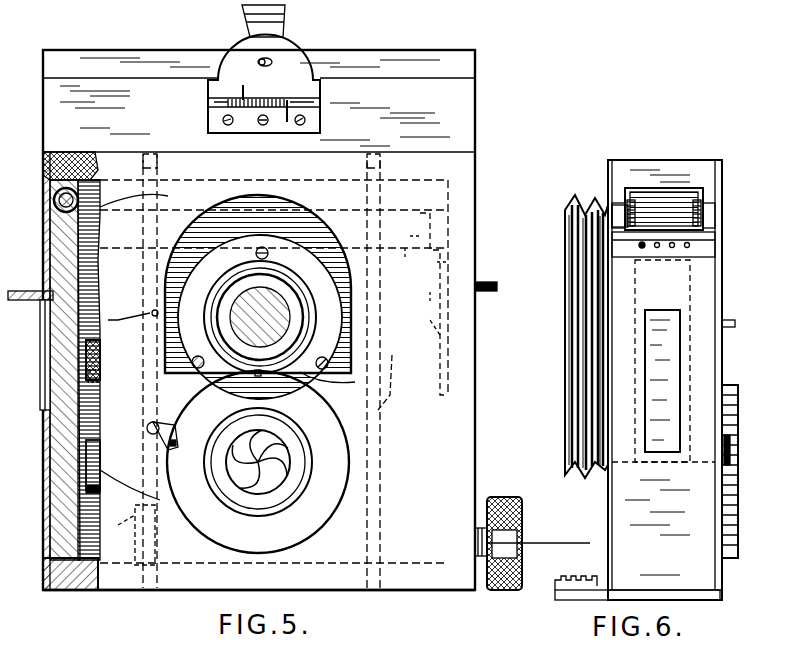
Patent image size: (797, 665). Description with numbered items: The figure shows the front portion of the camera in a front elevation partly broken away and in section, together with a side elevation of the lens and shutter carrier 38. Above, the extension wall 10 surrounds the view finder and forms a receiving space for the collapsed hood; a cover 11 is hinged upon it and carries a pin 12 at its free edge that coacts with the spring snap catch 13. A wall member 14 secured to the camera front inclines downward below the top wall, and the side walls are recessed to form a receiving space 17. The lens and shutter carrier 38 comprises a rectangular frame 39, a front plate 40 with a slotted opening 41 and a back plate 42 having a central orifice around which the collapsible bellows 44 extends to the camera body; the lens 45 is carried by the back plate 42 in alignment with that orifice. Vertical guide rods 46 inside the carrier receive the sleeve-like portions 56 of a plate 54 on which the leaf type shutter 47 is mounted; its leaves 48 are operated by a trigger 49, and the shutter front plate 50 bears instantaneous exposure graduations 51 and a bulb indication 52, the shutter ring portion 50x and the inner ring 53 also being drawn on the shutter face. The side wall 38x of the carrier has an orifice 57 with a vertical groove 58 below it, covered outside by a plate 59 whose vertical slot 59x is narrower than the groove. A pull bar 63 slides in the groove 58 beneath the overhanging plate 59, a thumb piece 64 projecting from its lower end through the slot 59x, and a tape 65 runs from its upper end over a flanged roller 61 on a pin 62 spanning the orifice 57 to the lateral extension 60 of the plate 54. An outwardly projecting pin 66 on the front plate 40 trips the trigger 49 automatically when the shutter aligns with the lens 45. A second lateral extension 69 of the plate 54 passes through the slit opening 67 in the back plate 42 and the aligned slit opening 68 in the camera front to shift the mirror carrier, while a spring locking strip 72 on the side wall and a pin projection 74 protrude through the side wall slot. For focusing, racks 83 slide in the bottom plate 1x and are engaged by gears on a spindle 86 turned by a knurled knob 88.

In FIG. 5, the extension wall 10 is at (468, 133).
In FIG. 5, the cover 11 is at (466, 68).
In FIG. 5, the pin 12 is at (270, 60).
In FIG. 5, the spring snap catch 13 is at (292, 83).
In FIG. 5, the wall member 14 is at (424, 304).
In FIG. 5, the receiving space 17 is at (445, 228).
In FIG. 5, the lens and shutter carrier 38 is at (476, 210).
In FIG. 6, the lens and shutter carrier 38 is at (676, 160).
In FIG. 5, the side wall of the lens and shutter carrier 38x is at (56, 501).
In FIG. 6, the side wall of the lens and shutter carrier 38x is at (690, 178).
In FIG. 5, the rectangular frame 39 is at (458, 472).
In FIG. 6, the rectangular frame 39 is at (624, 162).
In FIG. 5, the front plate 40 is at (393, 580).
In FIG. 6, the front plate 40 is at (716, 583).
In FIG. 5, the slotted opening 41 is at (180, 246).
In FIG. 5, the back plate 42 is at (145, 195).
In FIG. 6, the back plate 42 is at (608, 184).
In FIG. 6, the collapsible bellows 44 is at (568, 286).
In FIG. 5, the lens 45 is at (298, 265).
In FIG. 5, the vertical guide rods 46 is at (142, 590).
In FIG. 5, the shutter 47 is at (272, 505).
In FIG. 6, the shutter 47 is at (735, 533).
In FIG. 5, the leaves 48 is at (254, 477).
In FIG. 5, the trigger 49 is at (148, 430).
In FIG. 6, the trigger 49 is at (716, 462).
In FIG. 5, the front plate of the shutter 50 is at (327, 448).
In FIG. 5, the shutter ring portion 50x is at (335, 356).
In FIG. 5, the instantaneous exposure graduations 51 is at (358, 384).
In FIG. 5, the bulb indication 52 is at (247, 444).
In FIG. 5, the shutter ring inner 53 is at (195, 473).
In FIG. 5, the plate 54 is at (370, 410).
In FIG. 5, the sleeve-like portion 56 is at (425, 533).
In FIG. 5, the orifice 57 is at (75, 152).
In FIG. 5, the vertical groove 58 is at (46, 380).
In FIG. 5, the plate 59 is at (44, 556).
In FIG. 6, the plate 59 is at (663, 530).
In FIG. 5, the vertical slot 59x is at (42, 418).
In FIG. 6, the vertical slot 59x is at (648, 470).
In FIG. 5, the lateral extension 60 is at (111, 380).
In FIG. 5, the flanged roller 61 is at (92, 172).
In FIG. 5, the pin 62 is at (52, 204).
In FIG. 5, the pull bar 63 is at (88, 276).
In FIG. 6, the pull bar 63 is at (683, 256).
In FIG. 5, the thumb piece 64 is at (29, 283).
In FIG. 6, the thumb piece 64 is at (668, 320).
In FIG. 5, the tape 65 is at (100, 360).
In FIG. 6, the tape 65 is at (680, 213).
In FIG. 5, the pin 66 is at (175, 283).
In FIG. 6, the pin 66 is at (735, 323).
In FIG. 5, the slit opening 67 is at (241, 307).
In FIG. 5, the slit opening 68 is at (110, 430).
In FIG. 5, the lateral extension 69 is at (100, 468).
In FIG. 5, the spring locking strip 72 is at (436, 326).
In FIG. 5, the pin projection 74 is at (486, 292).
In FIG. 6, the racks 83 is at (578, 585).
In FIG. 5, the spindle 86 is at (532, 543).
In FIG. 5, the knurled knob 88 is at (500, 592).
In FIG. 6, the bottom plate 1x is at (666, 603).